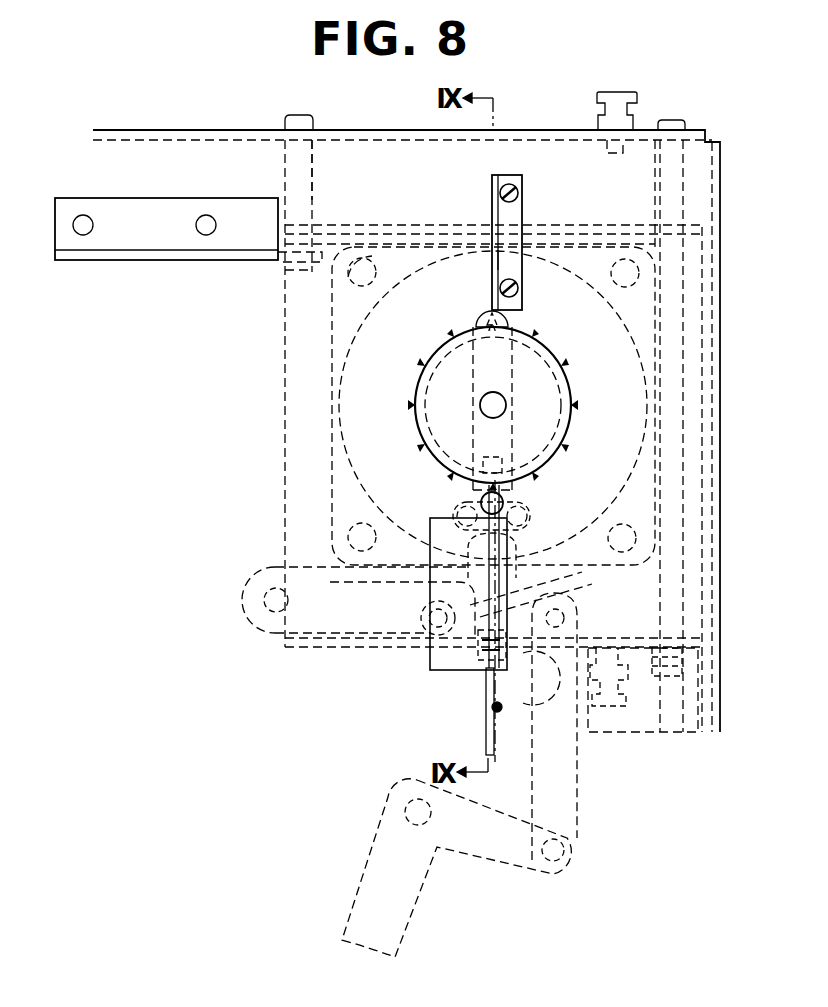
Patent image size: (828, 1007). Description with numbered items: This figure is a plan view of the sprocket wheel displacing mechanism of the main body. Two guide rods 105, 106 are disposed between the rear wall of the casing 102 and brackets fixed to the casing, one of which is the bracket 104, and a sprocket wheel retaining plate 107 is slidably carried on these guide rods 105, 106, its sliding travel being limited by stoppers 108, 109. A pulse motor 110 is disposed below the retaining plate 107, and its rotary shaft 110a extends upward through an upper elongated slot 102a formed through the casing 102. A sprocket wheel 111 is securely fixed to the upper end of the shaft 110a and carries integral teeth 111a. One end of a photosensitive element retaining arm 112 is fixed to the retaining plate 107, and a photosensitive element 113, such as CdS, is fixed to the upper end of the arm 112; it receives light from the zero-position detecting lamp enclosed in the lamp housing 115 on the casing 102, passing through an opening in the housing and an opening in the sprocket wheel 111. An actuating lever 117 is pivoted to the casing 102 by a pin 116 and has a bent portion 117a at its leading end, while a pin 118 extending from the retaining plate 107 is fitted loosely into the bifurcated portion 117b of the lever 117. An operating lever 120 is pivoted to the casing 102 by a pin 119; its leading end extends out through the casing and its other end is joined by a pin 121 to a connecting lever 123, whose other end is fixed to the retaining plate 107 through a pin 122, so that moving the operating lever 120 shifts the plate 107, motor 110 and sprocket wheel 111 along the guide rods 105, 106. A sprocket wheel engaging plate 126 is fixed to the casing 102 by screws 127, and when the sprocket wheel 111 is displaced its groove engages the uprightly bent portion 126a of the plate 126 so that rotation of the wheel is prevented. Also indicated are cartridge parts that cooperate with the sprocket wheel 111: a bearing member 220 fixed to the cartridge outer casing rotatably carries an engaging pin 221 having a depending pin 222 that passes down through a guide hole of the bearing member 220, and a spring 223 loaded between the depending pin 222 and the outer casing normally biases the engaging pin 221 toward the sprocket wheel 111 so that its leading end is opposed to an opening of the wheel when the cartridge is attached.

The casing 102 is at (195, 128).
The upper elongated slot 102a is at (506, 376).
The bracket 104 is at (160, 260).
The guide rod 105 is at (657, 208).
The guide rod 106 is at (313, 197).
The sprocket wheel retaining plate 107 is at (285, 335).
The stopper 108 is at (613, 703).
The stopper 109 is at (637, 98).
The pulse motor 110 is at (622, 287).
The rotary shaft 110a is at (480, 408).
The sprocket wheel 111 is at (442, 352).
The teeth 111a is at (490, 344).
The photosensitive element retaining arm 112 is at (505, 497).
The photosensitive element 113 is at (510, 448).
The lamp housing 115 is at (532, 515).
The pin 116 is at (287, 600).
The actuating lever 117 is at (322, 558).
The bent portion 117a is at (545, 601).
The bifurcated portion 117b is at (438, 603).
The pin 118 is at (428, 618).
The pin 119 is at (430, 801).
The operating lever 120 is at (377, 843).
The pin 121 is at (574, 850).
The pin 122 is at (607, 600).
The connecting lever 123 is at (607, 733).
The sprocket wheel engaging plate 126 is at (505, 215).
The uprightly bent portion 126a is at (492, 266).
The screw 127 is at (518, 194).
The bearing member 220 is at (452, 670).
The engaging pin 221 is at (483, 747).
The depending pin 222 is at (482, 662).
The spring 223 is at (503, 706).